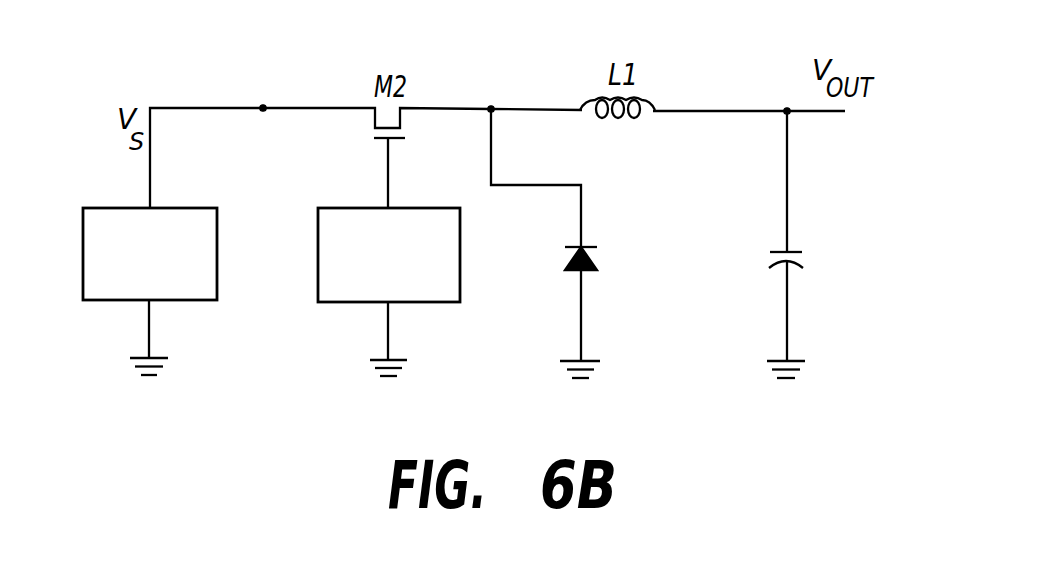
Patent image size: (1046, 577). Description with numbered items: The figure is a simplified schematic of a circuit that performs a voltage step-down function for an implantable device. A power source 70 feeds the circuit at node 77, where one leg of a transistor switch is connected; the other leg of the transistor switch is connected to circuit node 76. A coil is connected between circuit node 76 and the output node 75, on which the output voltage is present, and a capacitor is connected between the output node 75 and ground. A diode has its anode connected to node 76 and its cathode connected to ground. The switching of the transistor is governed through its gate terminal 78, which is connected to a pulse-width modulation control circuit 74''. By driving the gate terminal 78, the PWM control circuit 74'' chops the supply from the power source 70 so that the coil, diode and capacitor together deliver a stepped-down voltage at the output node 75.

The power source 70 is at (100, 303).
The pulse-width modulation control circuit 74'' is at (415, 303).
The output node 75 is at (787, 113).
The circuit node 76 is at (492, 108).
The node 77 is at (263, 106).
The gate terminal 78 is at (388, 183).